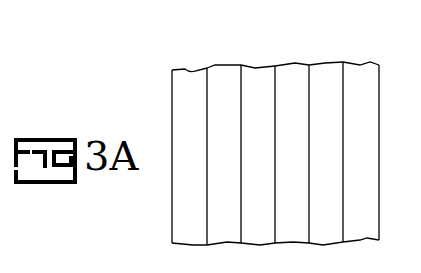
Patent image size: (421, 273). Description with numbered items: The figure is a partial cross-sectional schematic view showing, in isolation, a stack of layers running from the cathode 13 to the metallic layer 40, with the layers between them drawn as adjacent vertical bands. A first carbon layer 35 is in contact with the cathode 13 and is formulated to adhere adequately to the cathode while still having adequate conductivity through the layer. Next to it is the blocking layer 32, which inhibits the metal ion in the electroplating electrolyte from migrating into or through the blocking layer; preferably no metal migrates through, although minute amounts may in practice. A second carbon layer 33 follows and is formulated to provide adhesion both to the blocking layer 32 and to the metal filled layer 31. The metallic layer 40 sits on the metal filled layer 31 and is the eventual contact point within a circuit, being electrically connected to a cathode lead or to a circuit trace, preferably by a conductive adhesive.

The cathode 13 is at (193, 68).
The first carbon layer 35 is at (223, 66).
The blocking layer 32 is at (256, 67).
The second carbon layer 33 is at (293, 66).
The metal filled layer 31 is at (322, 65).
The metallic layer 40 is at (357, 63).